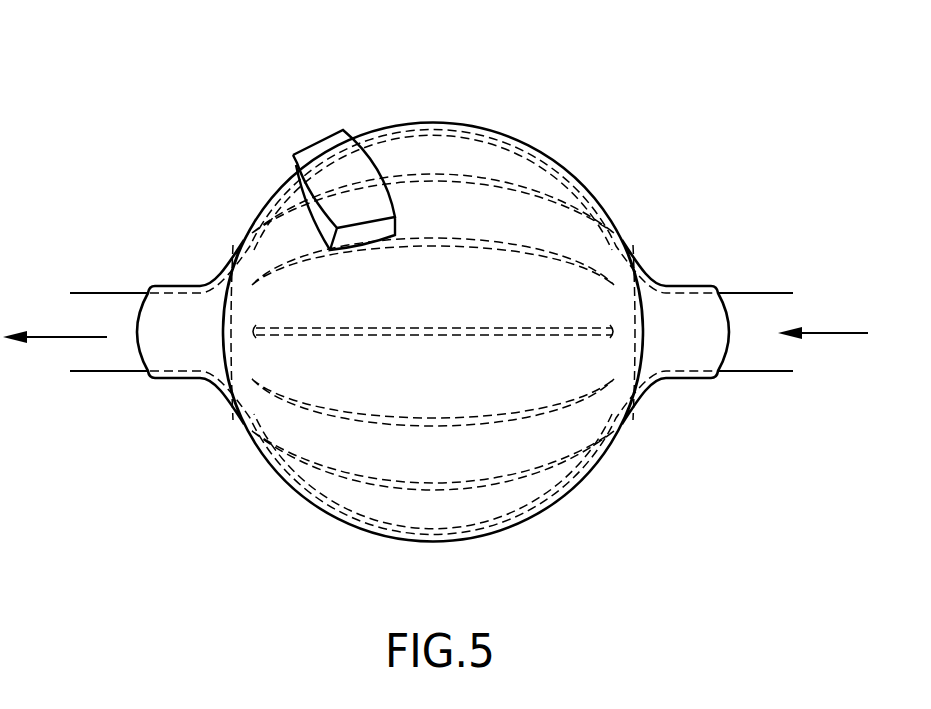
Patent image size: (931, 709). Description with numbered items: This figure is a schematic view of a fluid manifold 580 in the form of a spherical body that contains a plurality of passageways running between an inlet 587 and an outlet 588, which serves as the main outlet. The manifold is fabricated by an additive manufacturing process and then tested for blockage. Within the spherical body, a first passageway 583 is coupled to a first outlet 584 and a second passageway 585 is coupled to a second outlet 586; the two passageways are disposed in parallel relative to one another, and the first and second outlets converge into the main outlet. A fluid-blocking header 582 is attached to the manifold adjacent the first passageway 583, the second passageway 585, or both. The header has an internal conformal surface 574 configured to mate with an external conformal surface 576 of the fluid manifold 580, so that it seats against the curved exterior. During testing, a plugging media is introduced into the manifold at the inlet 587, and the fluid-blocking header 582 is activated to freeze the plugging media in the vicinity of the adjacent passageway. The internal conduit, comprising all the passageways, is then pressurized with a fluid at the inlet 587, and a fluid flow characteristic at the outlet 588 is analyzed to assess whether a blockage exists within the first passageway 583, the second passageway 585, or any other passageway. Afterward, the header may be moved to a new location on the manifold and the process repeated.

The fluid manifold 580 is at (178, 90).
The fluid-blocking header 582 is at (284, 127).
The internal conformal surface 574 is at (310, 190).
The external conformal surface 576 is at (327, 233).
The first outlet 584 is at (280, 215).
The second outlet 586 is at (263, 260).
The first passageway 583 is at (503, 165).
The second passageway 585 is at (537, 218).
The inlet 587 is at (817, 335).
The outlet 588 is at (33, 340).